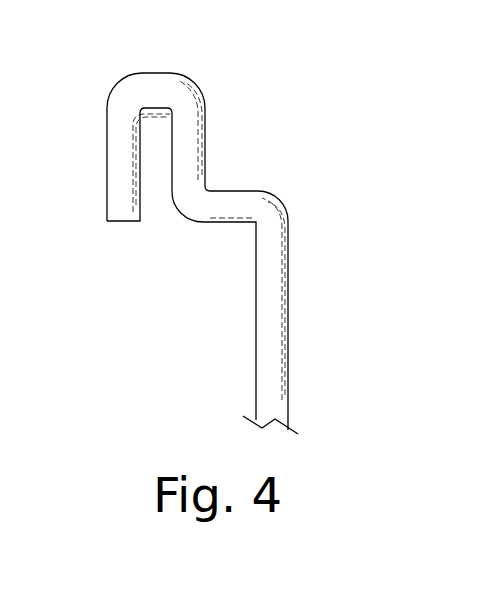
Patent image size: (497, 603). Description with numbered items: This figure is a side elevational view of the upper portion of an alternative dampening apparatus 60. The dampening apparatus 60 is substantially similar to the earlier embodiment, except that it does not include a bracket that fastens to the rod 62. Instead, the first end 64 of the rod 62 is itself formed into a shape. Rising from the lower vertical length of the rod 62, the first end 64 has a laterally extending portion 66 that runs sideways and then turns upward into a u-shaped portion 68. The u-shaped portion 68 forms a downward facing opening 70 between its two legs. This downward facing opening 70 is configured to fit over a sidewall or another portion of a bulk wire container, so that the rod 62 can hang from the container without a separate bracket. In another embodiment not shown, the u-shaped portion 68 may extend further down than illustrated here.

The dampening apparatus 60 is at (96, 213).
The rod 62 is at (274, 338).
The first end 64 is at (210, 85).
The laterally extending portion 66 is at (243, 206).
The u-shaped portion 68 is at (152, 88).
The downward facing opening 70 is at (160, 184).